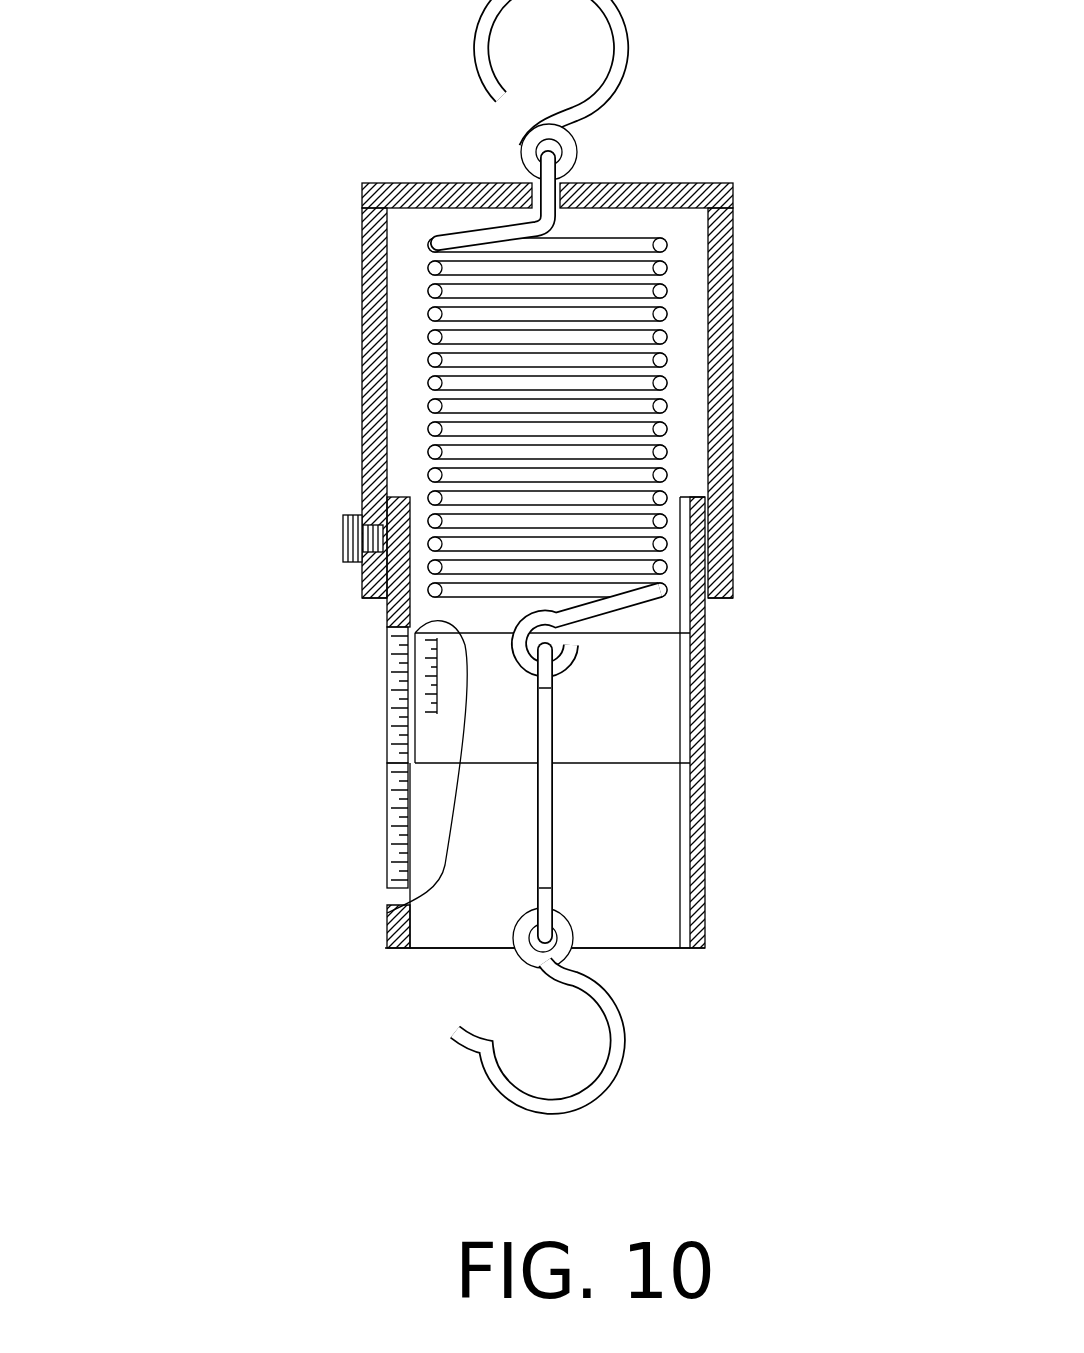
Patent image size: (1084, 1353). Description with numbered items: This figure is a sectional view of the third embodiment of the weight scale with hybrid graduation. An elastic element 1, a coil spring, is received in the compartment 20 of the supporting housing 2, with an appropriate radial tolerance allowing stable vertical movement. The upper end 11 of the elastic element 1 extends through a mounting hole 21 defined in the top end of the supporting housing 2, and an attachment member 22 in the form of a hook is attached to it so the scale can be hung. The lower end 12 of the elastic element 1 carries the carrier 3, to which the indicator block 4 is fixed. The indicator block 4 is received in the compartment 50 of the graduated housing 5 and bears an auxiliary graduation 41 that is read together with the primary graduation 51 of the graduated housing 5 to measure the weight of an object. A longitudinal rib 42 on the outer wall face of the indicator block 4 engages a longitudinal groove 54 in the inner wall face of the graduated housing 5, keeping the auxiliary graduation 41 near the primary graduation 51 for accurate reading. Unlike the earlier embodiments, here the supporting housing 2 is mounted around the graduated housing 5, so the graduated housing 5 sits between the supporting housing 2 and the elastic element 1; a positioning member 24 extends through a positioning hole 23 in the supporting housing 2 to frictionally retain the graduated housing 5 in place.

The elastic element 1 is at (672, 337).
The supporting housing 2 is at (407, 180).
The carrier 3 is at (610, 846).
The indicator block 4 is at (668, 732).
The graduated housing 5 is at (318, 973).
The upper end 11 is at (513, 222).
The lower end 12 is at (583, 613).
The compartment 20 is at (663, 613).
The mounting hole 21 is at (598, 183).
The attachment member 22 is at (618, 43).
The positioning hole 23 is at (363, 498).
The positioning member 24 is at (343, 533).
The auxiliary graduation 41 is at (407, 655).
The longitudinal rib 42 is at (705, 753).
The compartment 50 is at (442, 1003).
The primary graduation 51 is at (392, 808).
The longitudinal groove 54 is at (685, 945).